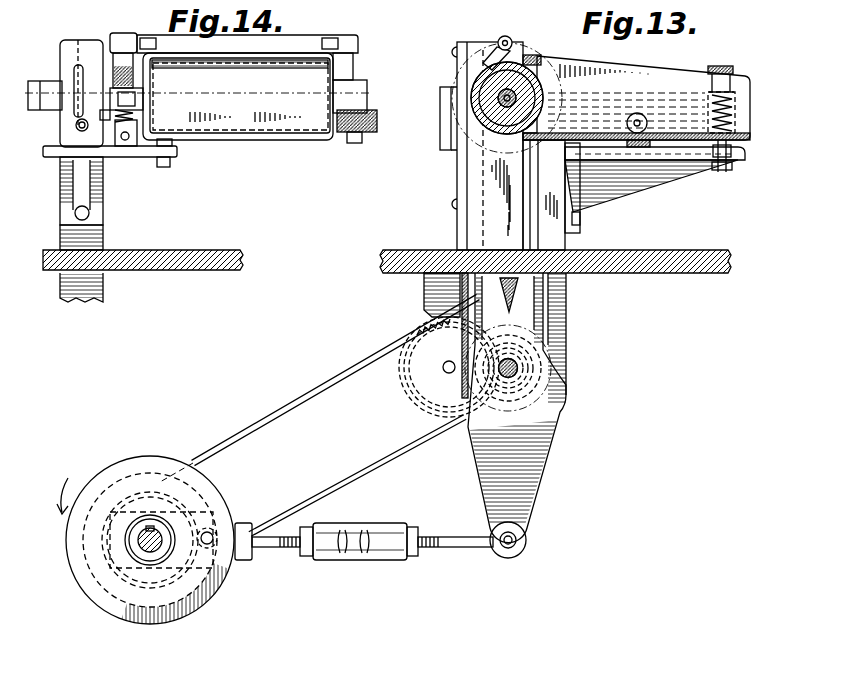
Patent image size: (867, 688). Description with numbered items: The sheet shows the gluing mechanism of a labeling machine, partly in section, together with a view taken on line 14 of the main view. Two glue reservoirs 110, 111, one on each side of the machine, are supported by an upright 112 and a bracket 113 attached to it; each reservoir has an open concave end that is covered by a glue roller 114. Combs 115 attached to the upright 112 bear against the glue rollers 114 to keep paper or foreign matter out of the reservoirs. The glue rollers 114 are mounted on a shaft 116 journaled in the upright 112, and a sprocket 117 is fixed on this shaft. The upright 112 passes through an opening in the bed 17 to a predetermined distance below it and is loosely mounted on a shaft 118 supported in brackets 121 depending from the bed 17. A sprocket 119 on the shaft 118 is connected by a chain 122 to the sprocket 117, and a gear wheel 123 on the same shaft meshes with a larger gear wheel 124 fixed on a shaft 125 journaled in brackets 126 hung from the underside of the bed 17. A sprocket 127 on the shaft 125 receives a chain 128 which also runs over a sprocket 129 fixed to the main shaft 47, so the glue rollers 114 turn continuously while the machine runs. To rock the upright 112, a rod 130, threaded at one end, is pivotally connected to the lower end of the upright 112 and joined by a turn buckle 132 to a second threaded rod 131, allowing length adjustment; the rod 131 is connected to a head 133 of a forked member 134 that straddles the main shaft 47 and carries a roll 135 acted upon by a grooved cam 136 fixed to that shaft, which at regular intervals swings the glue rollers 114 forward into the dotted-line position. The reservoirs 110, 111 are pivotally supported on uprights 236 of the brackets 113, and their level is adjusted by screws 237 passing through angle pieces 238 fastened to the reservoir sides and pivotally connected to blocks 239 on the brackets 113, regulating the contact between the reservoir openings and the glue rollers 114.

In FIG. 13, the section line 14— 14 is at (622, 321).
In FIG. 14, the bed 17 is at (208, 251).
In FIG. 13, the bed 17 is at (700, 251).
In FIG. 13, the main shaft 47 is at (148, 541).
In FIG. 13, the glue reservoir 110 is at (671, 79).
In FIG. 14, the glue reservoir 111 is at (277, 128).
In FIG. 13, the glue reservoir 111 is at (626, 110).
In FIG. 14, the upright 112 is at (103, 236).
In FIG. 13, the upright 112 is at (566, 289).
In FIG. 14, the bracket 113 is at (103, 199).
In FIG. 13, the bracket 113 is at (601, 192).
In FIG. 14, the glue roller 114 is at (213, 68).
In FIG. 13, the glue roller 114 is at (541, 60).
In FIG. 14, the comb 115 is at (233, 53).
In FIG. 13, the comb 115 is at (490, 74).
In FIG. 14, the shaft 116 is at (35, 83).
In FIG. 13, the shaft 116 is at (511, 60).
In FIG. 14, the sprocket 117 is at (78, 40).
In FIG. 13, the sprocket 117 is at (478, 84).
In FIG. 13, the shaft 118 is at (521, 373).
In FIG. 13, the sprocket 119 is at (549, 411).
In FIG. 13, the bracket 121 is at (541, 340).
In FIG. 13, the chain 122 is at (483, 177).
In FIG. 13, the gear wheel 123 is at (508, 380).
In FIG. 13, the gear wheel 124 is at (428, 336).
In FIG. 13, the shaft 125 is at (448, 368).
In FIG. 13, the bracket 126 is at (424, 294).
In FIG. 13, the sprocket 127 is at (418, 376).
In FIG. 13, the chain 128 is at (316, 393).
In FIG. 13, the sprocket 129 is at (125, 500).
In FIG. 13, the rod 130 is at (456, 549).
In FIG. 13, the rod 131 is at (279, 549).
In FIG. 13, the turn buckle 132 is at (351, 561).
In FIG. 13, the head 133 is at (249, 525).
In FIG. 13, the forked member 134 is at (122, 583).
In FIG. 13, the roll 135 is at (213, 530).
In FIG. 13, the grooved cam 136 is at (128, 606).
In FIG. 14, the upright 236 is at (108, 119).
In FIG. 13, the upright 236 is at (641, 146).
In FIG. 14, the screw 237 is at (135, 40).
In FIG. 13, the screw 237 is at (717, 68).
In FIG. 14, the angle piece 238 is at (141, 99).
In FIG. 13, the angle piece 238 is at (751, 109).
In FIG. 14, the block 239 is at (125, 147).
In FIG. 13, the block 239 is at (739, 151).